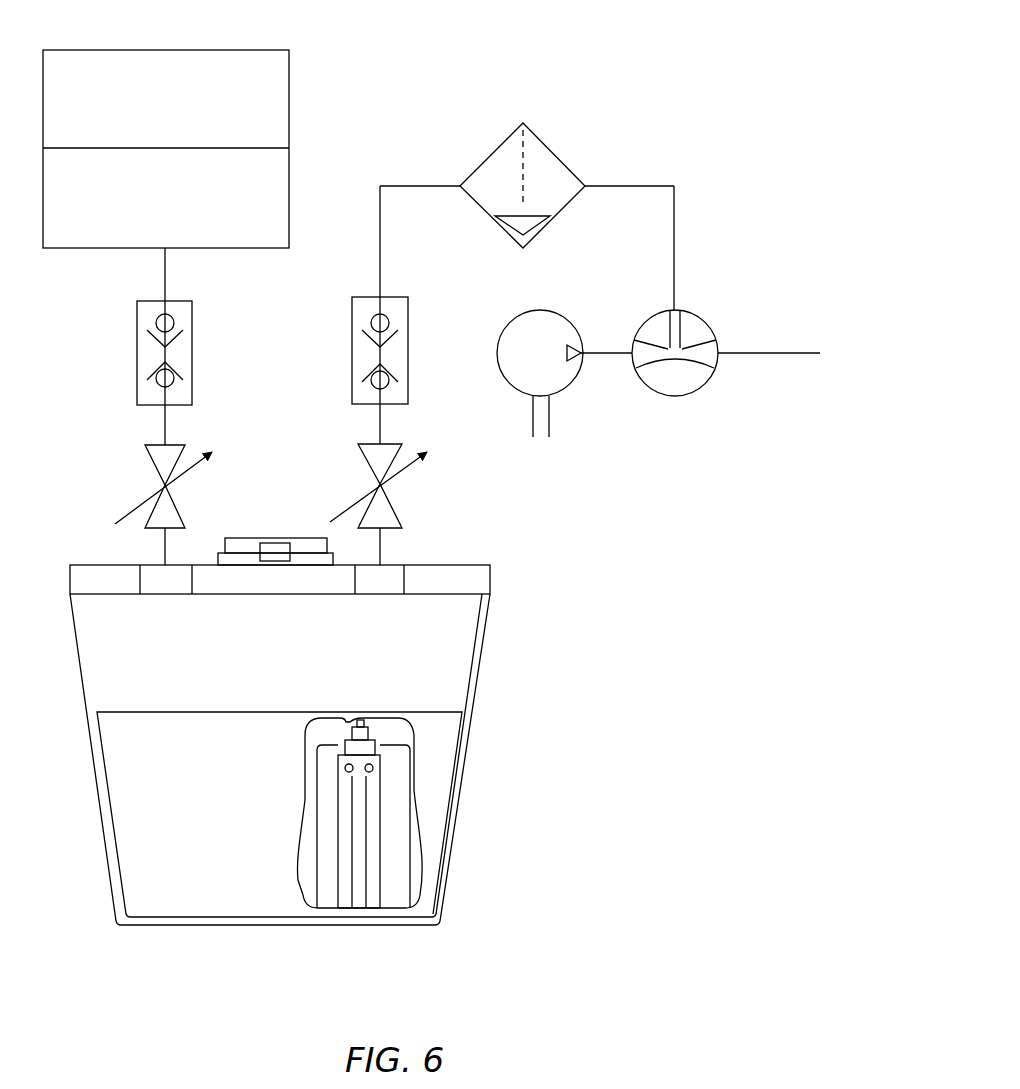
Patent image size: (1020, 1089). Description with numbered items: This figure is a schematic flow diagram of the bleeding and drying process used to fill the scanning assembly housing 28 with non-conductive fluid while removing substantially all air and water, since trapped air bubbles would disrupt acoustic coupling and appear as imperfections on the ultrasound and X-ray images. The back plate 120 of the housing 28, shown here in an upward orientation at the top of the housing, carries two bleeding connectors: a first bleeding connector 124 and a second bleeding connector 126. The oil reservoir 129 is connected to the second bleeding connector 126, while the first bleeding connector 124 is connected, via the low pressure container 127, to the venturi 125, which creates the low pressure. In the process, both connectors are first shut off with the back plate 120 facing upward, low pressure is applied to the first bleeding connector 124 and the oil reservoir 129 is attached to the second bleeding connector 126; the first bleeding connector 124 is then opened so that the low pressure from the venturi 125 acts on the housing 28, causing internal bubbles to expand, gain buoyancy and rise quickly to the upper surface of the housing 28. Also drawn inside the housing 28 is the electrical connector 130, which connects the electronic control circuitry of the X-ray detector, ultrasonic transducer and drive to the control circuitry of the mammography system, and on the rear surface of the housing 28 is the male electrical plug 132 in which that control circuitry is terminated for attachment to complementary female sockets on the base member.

The housing 28 is at (245, 925).
The back plate 120 is at (237, 582).
The first bleeding connector 124 is at (380, 484).
The venturi 125 is at (680, 378).
The second bleeding connector 126 is at (165, 485).
The low pressure container 127 is at (523, 123).
The oil reservoir 129 is at (113, 60).
The electrical connector 130 is at (385, 757).
The male electrical plug 132 is at (280, 538).